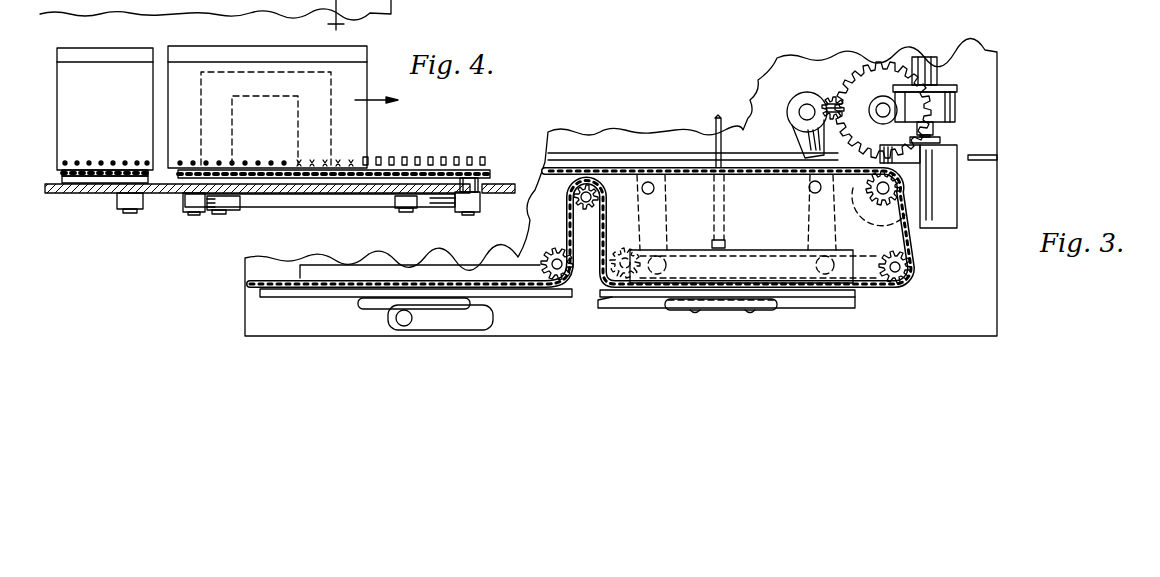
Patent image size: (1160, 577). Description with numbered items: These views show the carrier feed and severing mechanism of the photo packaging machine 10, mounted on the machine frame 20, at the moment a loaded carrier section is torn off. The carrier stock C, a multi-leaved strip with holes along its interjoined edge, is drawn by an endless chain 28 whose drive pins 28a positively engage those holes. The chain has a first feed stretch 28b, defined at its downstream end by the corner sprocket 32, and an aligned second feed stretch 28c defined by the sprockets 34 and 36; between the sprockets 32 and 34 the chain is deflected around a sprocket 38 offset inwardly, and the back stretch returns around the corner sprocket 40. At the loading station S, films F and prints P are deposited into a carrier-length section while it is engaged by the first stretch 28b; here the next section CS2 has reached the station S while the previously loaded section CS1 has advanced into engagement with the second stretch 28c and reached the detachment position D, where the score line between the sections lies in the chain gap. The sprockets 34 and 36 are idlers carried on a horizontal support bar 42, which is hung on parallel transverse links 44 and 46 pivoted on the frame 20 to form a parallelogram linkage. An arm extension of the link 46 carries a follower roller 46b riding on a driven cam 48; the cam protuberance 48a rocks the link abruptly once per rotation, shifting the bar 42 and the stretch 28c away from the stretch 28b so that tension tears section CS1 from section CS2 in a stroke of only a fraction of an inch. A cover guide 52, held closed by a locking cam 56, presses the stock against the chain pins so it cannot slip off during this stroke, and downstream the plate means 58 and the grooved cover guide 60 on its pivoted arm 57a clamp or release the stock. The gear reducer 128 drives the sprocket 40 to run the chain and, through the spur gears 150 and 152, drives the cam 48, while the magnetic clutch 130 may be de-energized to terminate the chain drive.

In FIG. 4, the machine 10 is at (340, 24).
In FIG. 3, the machine frame 20 is at (992, 113).
In FIG. 4, the endless chain 28 is at (498, 171).
In FIG. 4, the drive pins 28a is at (490, 160).
In FIG. 3, the first chain feed stretch 28b is at (549, 292).
In FIG. 3, the second chain feed stretch 28c is at (892, 289).
In FIG. 4, the corner sprocket 32 is at (125, 170).
In FIG. 3, the corner sprocket 32 is at (553, 250).
In FIG. 4, the sprocket 34 is at (183, 186).
In FIG. 3, the sprocket 34 is at (625, 250).
In FIG. 4, the sprocket 36 is at (469, 178).
In FIG. 3, the sprocket 36 is at (913, 266).
In FIG. 3, the sprocket 38 is at (586, 212).
In FIG. 3, the corner sprocket 40 is at (896, 190).
In FIG. 4, the support bar 42 is at (450, 203).
In FIG. 3, the support bar 42 is at (860, 262).
In FIG. 4, the transverse link 44 is at (238, 200).
In FIG. 3, the transverse link 44 is at (664, 214).
In FIG. 4, the transverse link 46 is at (396, 204).
In FIG. 3, the transverse link 46 is at (812, 205).
In FIG. 3, the follower roller 46b is at (800, 106).
In FIG. 3, the cam 48 is at (869, 68).
In FIG. 3, the cam protuberance 48a is at (832, 97).
In FIG. 3, the cover guide 52 is at (519, 298).
In FIG. 3, the locking cam 56 is at (392, 317).
In FIG. 3, the pivoted arm 57a is at (732, 311).
In FIG. 3, the plate means 58 is at (740, 257).
In FIG. 3, the cover guide 60 is at (639, 302).
In FIG. 3, the gear reducer 128 is at (948, 222).
In FIG. 3, the magnetic clutch 130 is at (952, 102).
In FIG. 3, the spur gear 150 is at (865, 183).
In FIG. 3, the spur gear 152 is at (890, 58).
In FIG. 4, the carrier stock C is at (60, 40).
In FIG. 3, the carrier-length section CS1 is at (864, 307).
In FIG. 4, the carrier-length section CS2 is at (122, 91).
In FIG. 4, the prints P is at (218, 72).
In FIG. 4, the photographic films F is at (251, 96).
In FIG. 4, the loading station S is at (522, 2).
In FIG. 3, the loading station S is at (358, 316).
In FIG. 3, the detachment position D is at (788, 313).